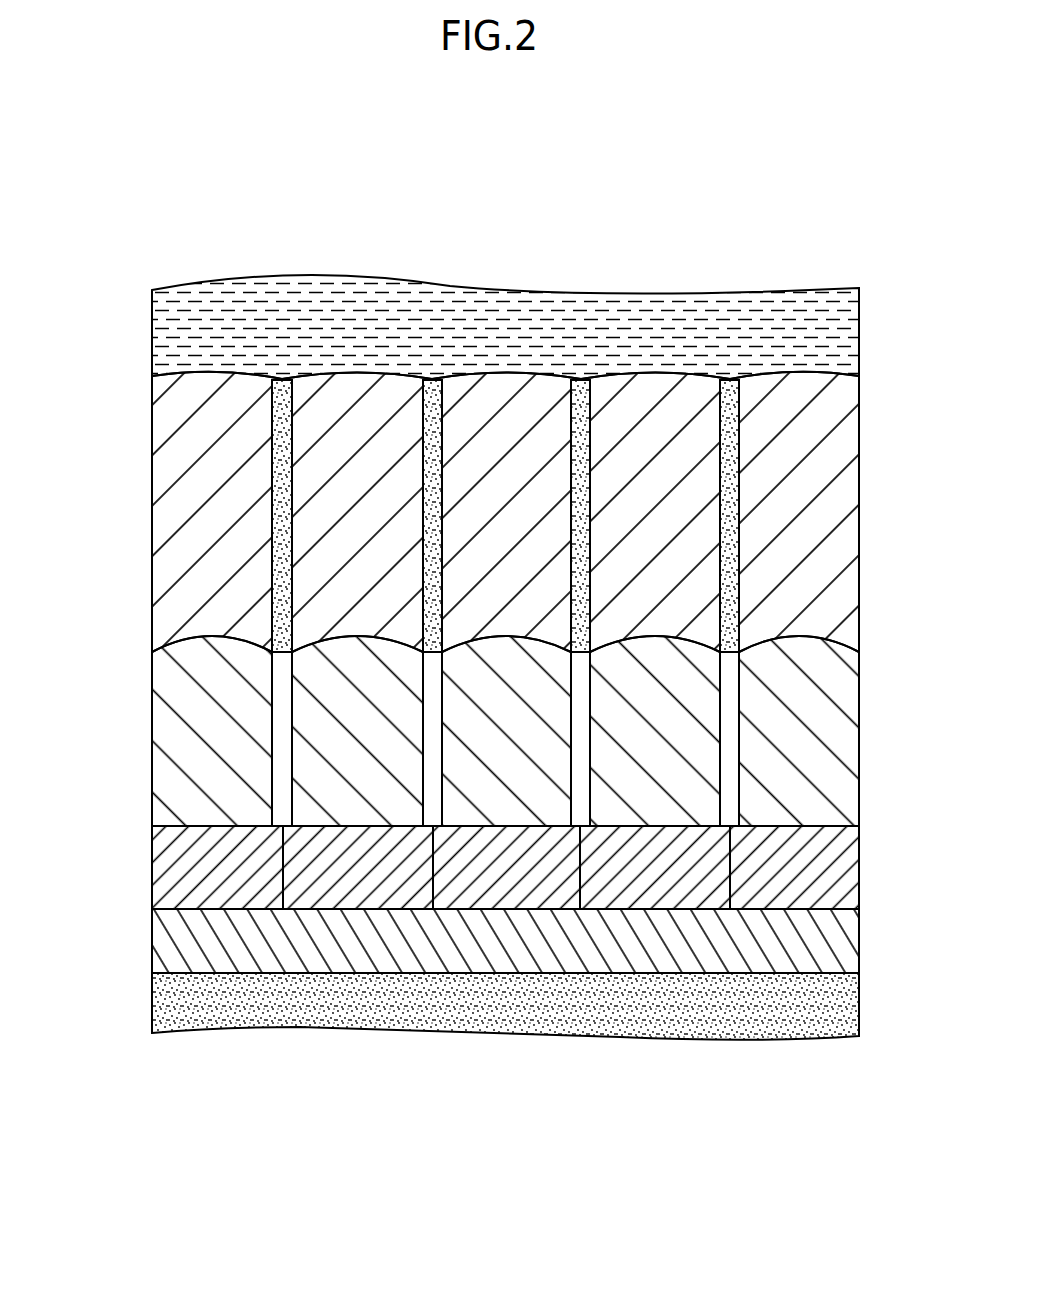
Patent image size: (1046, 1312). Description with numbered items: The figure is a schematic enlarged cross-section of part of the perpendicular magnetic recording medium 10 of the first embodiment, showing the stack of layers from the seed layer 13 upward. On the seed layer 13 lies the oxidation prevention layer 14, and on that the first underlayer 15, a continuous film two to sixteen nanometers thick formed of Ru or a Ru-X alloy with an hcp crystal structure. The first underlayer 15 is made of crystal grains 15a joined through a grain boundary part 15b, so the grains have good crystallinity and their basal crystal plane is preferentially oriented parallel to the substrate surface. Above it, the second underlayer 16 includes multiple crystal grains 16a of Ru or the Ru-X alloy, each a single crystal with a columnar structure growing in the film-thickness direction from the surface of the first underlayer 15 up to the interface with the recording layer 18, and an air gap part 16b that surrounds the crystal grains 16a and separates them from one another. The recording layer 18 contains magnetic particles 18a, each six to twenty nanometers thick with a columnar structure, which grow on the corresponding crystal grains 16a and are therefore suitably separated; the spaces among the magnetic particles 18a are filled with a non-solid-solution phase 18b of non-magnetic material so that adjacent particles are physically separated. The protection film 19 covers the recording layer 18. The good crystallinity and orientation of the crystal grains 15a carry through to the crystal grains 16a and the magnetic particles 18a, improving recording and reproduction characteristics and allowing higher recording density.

The perpendicular magnetic recording medium 10 is at (120, 261).
The seed layer 13 is at (860, 1004).
The oxidation prevention layer 14 is at (860, 937).
The first underlayer 15 is at (543, 993).
The crystal grains 15a is at (508, 908).
The grain boundary part 15b is at (590, 908).
The second underlayer 16 is at (501, 731).
The crystal grains 16a is at (185, 700).
The air gap part 16b is at (280, 775).
The recording layer 18 is at (542, 386).
The magnetic particles 18a is at (516, 372).
The non-solid-solution phase 18b is at (434, 440).
The protection film 19 is at (860, 325).